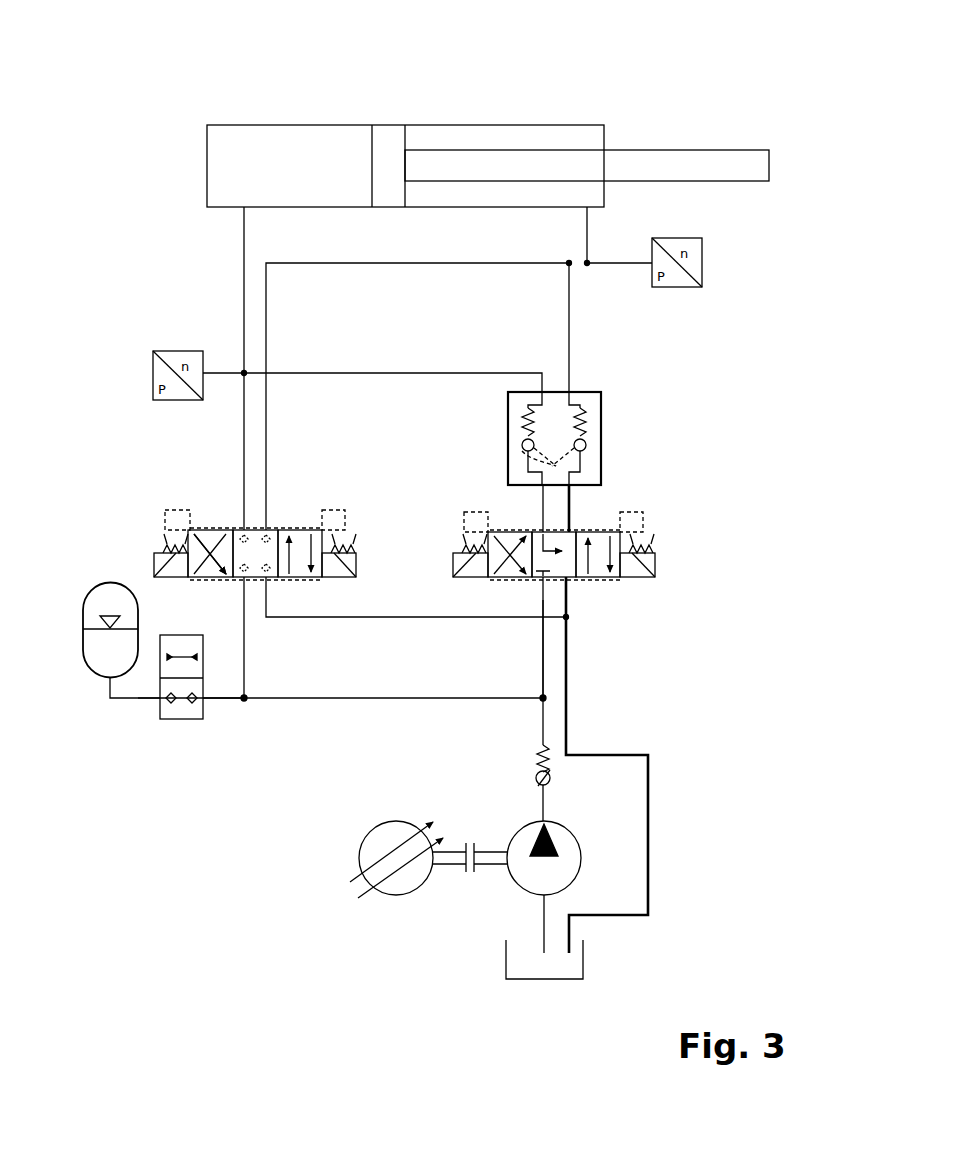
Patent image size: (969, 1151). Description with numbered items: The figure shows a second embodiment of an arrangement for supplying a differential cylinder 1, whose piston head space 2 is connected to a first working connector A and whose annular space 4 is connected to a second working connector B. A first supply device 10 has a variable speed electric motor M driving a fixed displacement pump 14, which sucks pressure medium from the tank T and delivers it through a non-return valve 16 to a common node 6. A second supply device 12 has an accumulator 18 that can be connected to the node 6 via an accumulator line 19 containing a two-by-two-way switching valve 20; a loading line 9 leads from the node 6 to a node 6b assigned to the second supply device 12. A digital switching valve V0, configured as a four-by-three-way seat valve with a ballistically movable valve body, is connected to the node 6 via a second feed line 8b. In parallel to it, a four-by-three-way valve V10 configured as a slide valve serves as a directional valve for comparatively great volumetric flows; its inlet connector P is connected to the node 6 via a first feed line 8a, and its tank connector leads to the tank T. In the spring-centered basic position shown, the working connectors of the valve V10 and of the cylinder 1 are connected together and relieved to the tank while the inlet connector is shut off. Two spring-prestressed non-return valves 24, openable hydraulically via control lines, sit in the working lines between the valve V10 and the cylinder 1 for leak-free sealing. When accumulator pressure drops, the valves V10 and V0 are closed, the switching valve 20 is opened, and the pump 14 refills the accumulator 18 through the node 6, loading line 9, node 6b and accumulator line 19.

The differential cylinder 1 is at (390, 116).
The piston head space 2 is at (295, 176).
The annular space 4 is at (513, 140).
The node 6 is at (541, 700).
The node 6b is at (245, 700).
The first feed line 8a is at (540, 660).
The second feed line 8b is at (244, 652).
The loading line 9 is at (392, 700).
The first supply device 10 is at (440, 916).
The second supply device 12 is at (136, 724).
The fixed displacement pump 14 is at (565, 872).
The non-return valve 16 is at (538, 779).
The accumulator 18 is at (110, 650).
The accumulator line 19 is at (150, 697).
The 2/2-way switching valve 20 is at (204, 706).
The non-return valve 24 is at (510, 460).
The digital switching valve V0 is at (287, 504).
The 4/3-way valve V10 is at (632, 488).